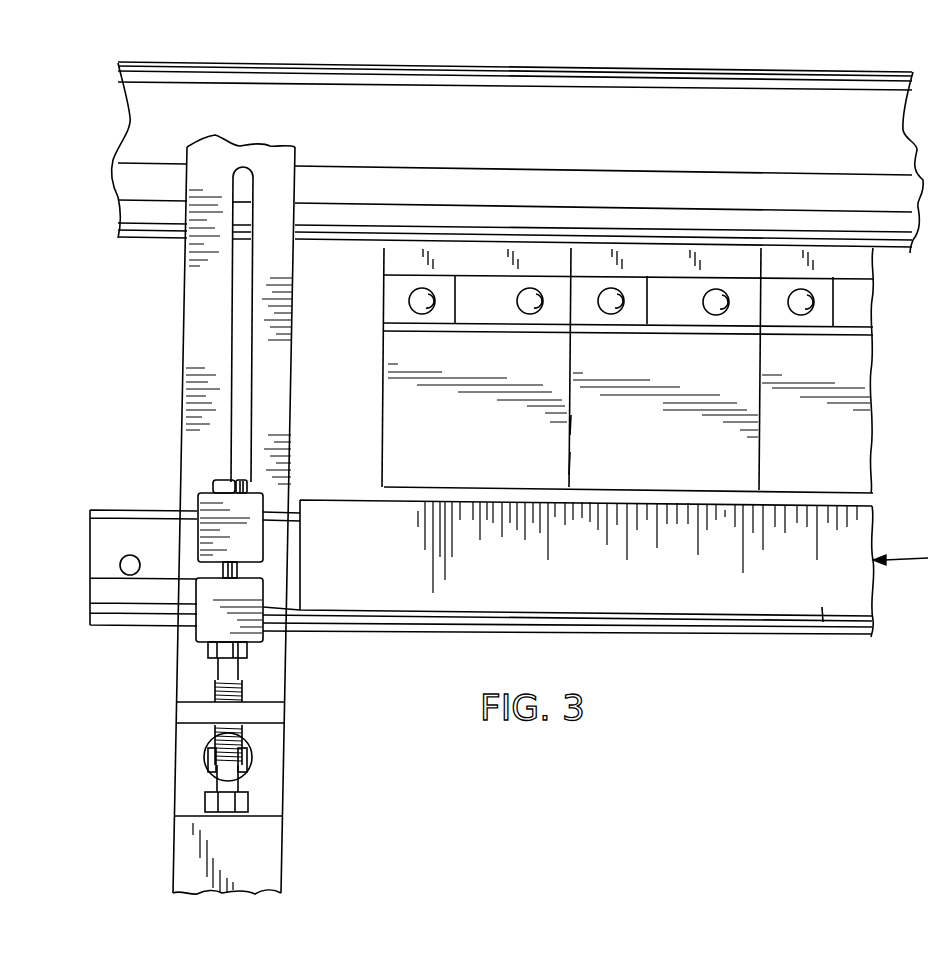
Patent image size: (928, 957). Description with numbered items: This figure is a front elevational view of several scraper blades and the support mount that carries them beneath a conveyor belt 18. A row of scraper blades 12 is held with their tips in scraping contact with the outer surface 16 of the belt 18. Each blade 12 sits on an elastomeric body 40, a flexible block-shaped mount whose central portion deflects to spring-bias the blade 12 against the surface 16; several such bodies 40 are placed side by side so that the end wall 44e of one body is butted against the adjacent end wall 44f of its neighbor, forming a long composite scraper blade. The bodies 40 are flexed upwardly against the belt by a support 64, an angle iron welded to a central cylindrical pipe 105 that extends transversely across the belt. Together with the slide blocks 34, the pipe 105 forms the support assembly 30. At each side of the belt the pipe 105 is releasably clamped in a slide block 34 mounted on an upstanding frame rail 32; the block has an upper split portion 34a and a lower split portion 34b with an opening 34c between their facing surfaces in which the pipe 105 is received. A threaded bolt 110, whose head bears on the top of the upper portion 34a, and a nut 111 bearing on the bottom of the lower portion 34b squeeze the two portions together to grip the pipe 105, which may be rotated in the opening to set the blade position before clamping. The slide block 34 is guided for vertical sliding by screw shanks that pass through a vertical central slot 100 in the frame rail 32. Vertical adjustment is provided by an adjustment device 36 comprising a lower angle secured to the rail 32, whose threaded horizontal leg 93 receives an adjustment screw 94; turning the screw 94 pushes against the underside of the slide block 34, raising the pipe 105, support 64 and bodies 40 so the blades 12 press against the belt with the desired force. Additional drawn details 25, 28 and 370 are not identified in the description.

The scraper blade 12 is at (469, 253).
The outer surface of conveyor belt 16 is at (347, 245).
The conveyor belt 18 is at (496, 146).
The holes 25 is at (421, 313).
The block assembly 28 is at (372, 376).
The support assembly 30 is at (160, 641).
The frame rail 32 is at (187, 387).
The slide block 34 is at (249, 531).
The upper split portion 34a is at (243, 532).
The lower split portion 34b is at (235, 606).
The opening 34c is at (263, 572).
The adjustment device 36 is at (268, 740).
The elastomeric body 40 is at (390, 421).
The end wall 44e is at (565, 468).
The adjacent end wall 44f is at (570, 417).
The support 64 is at (825, 628).
The horizontal leg 93 is at (273, 717).
The adjustment screw 94 is at (243, 690).
The central slot 100 is at (233, 313).
The pipe 105 is at (122, 508).
The threaded bolt 110 is at (243, 482).
The nut 111 is at (203, 658).
The bar side surface 370 is at (280, 358).